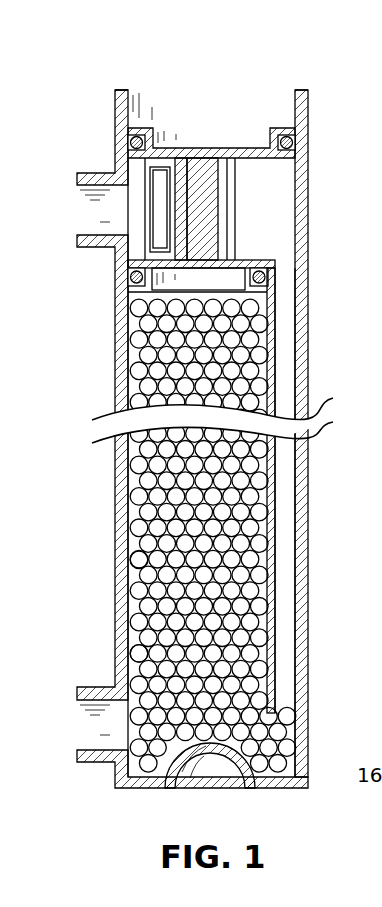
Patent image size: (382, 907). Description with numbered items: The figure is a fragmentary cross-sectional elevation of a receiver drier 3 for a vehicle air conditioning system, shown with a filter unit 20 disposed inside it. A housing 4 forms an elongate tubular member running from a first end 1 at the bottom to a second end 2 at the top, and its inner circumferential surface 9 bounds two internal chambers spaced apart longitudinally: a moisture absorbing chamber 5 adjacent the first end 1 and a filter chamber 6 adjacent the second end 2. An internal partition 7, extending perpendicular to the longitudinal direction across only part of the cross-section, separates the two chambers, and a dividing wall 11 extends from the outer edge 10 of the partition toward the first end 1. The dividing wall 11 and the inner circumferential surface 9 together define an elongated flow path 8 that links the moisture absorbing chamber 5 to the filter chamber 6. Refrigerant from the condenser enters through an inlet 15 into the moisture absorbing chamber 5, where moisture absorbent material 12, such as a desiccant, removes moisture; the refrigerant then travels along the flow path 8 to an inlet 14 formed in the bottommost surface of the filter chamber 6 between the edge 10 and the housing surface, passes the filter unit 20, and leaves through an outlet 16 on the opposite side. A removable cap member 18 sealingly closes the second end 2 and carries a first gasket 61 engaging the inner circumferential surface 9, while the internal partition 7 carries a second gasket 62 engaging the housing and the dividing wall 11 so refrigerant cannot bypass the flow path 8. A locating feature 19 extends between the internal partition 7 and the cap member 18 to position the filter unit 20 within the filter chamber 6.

The first end 1 is at (117, 790).
The second end 2 is at (122, 90).
The receiver drier 3 is at (105, 62).
The housing 4 is at (121, 318).
The moisture absorbing chamber 5 is at (135, 600).
The filter chamber 6 is at (267, 190).
The internal partition 7 is at (260, 252).
The flow path 8 is at (285, 373).
The inner circumferential surface 9 is at (294, 226).
The outer edge 10 is at (287, 266).
The dividing wall 11 is at (270, 320).
The moisture absorbent material 12 is at (140, 651).
The inlet 14 is at (282, 262).
The inlet 15 is at (90, 719).
The outlet 16 is at (92, 209).
The removable cap member 18 is at (232, 150).
The locating feature 19 is at (203, 163).
The filter unit 20 is at (182, 162).
The first gasket 61 is at (292, 143).
The second gasket 62 is at (135, 277).